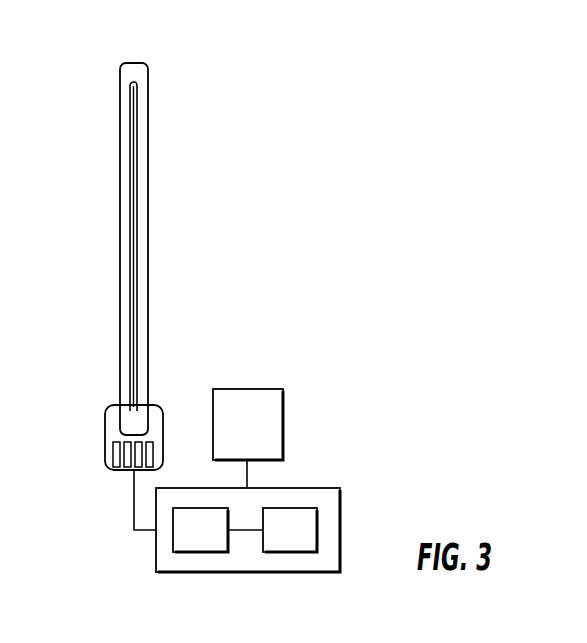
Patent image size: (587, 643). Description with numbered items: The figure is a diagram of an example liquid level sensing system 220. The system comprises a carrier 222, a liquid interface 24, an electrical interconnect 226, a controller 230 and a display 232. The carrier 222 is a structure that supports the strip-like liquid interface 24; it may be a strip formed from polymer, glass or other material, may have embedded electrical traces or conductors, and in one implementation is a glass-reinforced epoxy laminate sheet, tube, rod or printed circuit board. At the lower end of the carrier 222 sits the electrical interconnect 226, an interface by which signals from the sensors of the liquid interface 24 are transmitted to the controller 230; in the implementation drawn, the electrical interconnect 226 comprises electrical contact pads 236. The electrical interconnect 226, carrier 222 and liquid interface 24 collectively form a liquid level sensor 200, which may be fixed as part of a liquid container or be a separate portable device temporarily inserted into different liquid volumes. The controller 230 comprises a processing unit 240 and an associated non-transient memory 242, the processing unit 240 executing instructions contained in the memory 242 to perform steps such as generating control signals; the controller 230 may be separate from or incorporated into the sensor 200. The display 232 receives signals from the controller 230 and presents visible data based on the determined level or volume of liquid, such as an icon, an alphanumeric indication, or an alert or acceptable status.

The liquid level sensor 200 is at (117, 57).
The liquid level sensing system 220 is at (234, 244).
The carrier 222 is at (148, 193).
The liquid interface 24 is at (136, 123).
The electrical interconnect 226 is at (128, 406).
The electrical contact pads 236 is at (105, 440).
The display 232 is at (242, 388).
The controller 230 is at (221, 527).
The processing unit 240 is at (172, 540).
The memory 242 is at (293, 552).